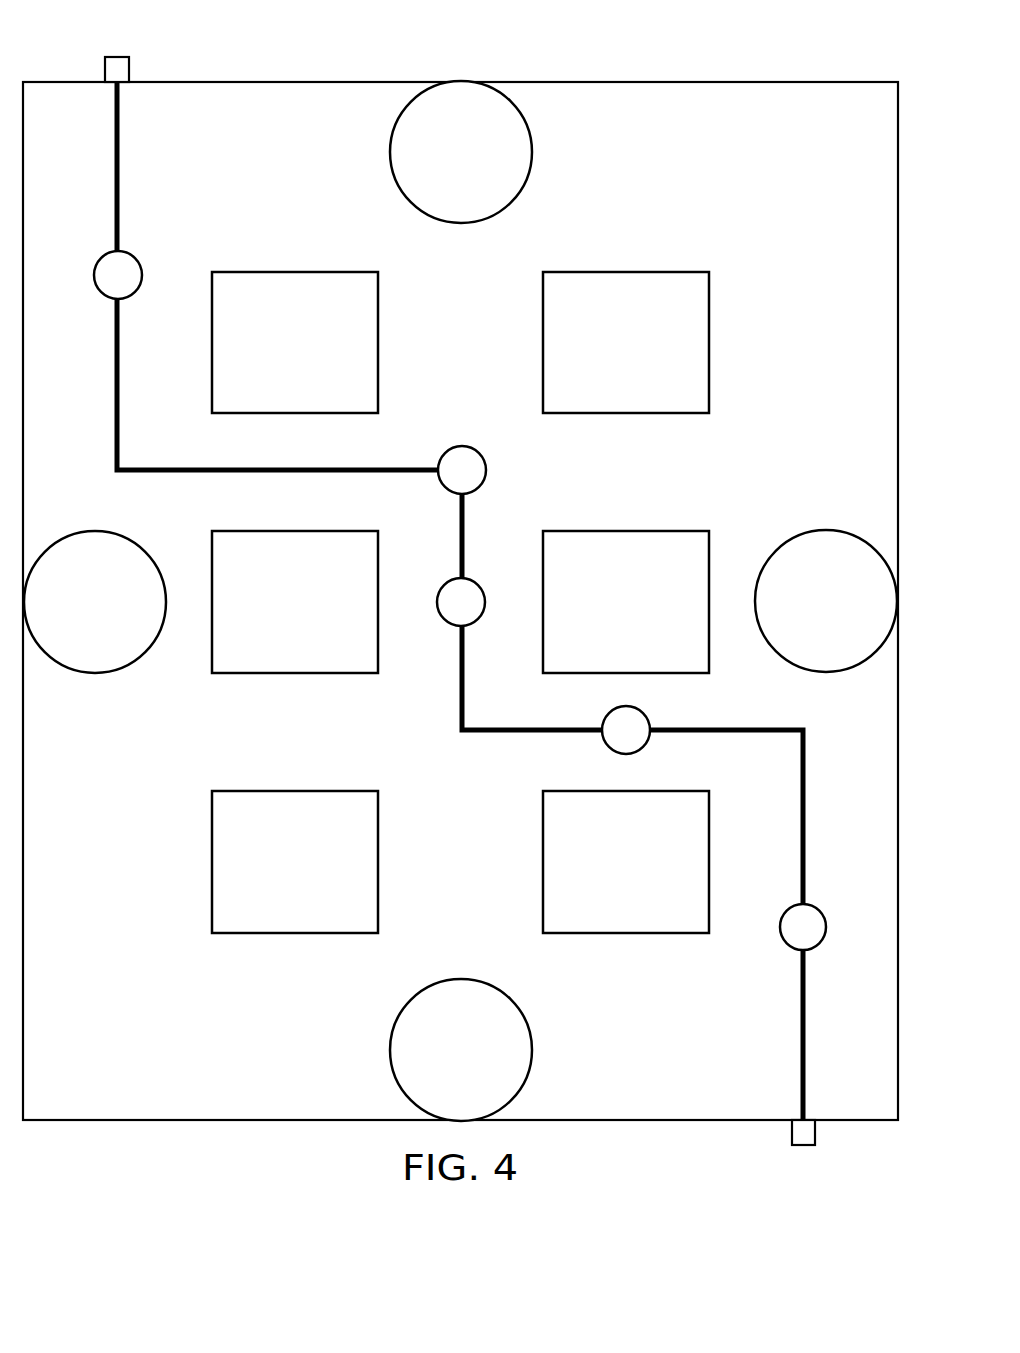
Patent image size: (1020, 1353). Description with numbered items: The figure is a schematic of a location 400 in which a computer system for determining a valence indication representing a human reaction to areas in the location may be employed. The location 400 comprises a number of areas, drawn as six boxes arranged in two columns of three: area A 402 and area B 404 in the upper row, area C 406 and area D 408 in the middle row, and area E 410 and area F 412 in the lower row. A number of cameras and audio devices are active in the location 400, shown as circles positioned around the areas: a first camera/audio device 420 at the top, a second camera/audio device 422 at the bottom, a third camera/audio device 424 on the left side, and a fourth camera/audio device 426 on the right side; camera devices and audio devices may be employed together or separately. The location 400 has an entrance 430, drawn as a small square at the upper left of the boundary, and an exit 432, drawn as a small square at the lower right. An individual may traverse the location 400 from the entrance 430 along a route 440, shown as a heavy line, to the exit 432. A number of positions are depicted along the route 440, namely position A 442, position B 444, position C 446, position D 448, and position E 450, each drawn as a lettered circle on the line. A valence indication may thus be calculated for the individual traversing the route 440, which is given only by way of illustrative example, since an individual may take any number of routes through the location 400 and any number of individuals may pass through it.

The location 400 is at (603, 81).
The area A 402 is at (273, 376).
The area B 404 is at (604, 376).
The area C 406 is at (273, 636).
The area D 408 is at (604, 636).
The area E 410 is at (273, 896).
The area F 412 is at (604, 896).
The camera/audio 1 420 is at (389, 153).
The camera/audio 2 422 is at (389, 1050).
The camera/audio 3 424 is at (92, 673).
The camera/audio 4 426 is at (830, 530).
The entrance 430 is at (112, 57).
The exit 432 is at (806, 1148).
The route 440 is at (485, 553).
The position A 442 is at (107, 254).
The position B 444 is at (456, 448).
The position C 446 is at (450, 624).
The position D 448 is at (648, 742).
The position E 450 is at (818, 950).